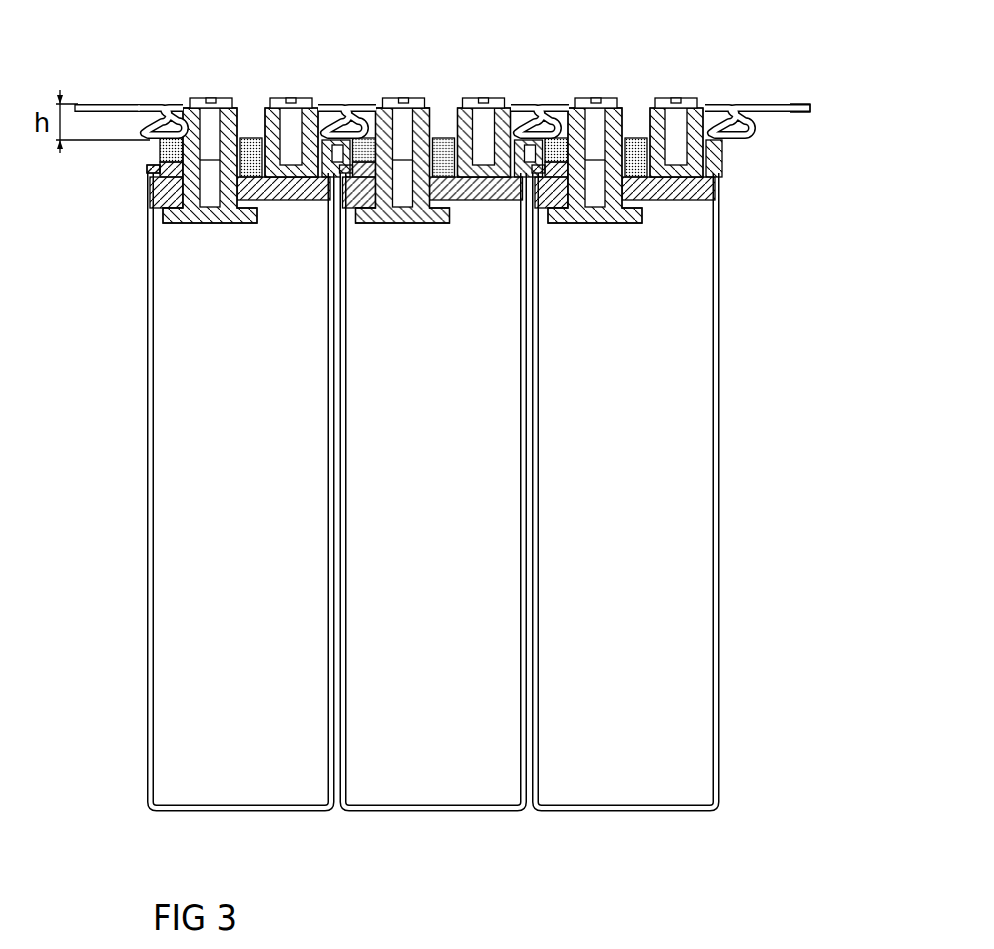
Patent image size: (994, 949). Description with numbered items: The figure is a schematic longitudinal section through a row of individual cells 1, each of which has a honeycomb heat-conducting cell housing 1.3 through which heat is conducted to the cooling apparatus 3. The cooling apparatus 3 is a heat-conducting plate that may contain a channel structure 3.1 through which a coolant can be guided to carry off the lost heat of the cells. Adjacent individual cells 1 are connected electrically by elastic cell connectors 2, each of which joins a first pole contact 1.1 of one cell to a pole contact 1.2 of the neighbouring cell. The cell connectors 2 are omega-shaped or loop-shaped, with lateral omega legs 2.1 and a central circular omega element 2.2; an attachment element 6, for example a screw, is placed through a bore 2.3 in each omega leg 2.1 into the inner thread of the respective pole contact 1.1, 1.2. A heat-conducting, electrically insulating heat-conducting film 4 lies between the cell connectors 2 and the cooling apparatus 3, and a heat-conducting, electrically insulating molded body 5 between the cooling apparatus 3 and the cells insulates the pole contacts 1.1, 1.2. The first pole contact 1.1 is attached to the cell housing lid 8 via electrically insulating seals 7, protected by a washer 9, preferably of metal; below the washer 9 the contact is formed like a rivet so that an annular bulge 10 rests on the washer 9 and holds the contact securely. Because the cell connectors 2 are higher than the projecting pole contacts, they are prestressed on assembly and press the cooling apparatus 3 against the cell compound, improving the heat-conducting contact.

The individual cell 1 is at (436, 800).
The first pole contact 1.1 is at (232, 99).
The second pole contact 1.2 is at (500, 99).
The cell housing 1.3 is at (148, 720).
The cell connector 2 is at (458, 106).
The omega leg 2.1 is at (804, 104).
The omega element 2.2 is at (736, 138).
The bore 2.3 is at (783, 113).
The cooling apparatus 3 is at (338, 179).
The channel structure 3.1 is at (341, 162).
The heat-conducting film 4 is at (447, 140).
The molded body 5 is at (458, 201).
The attachment element 6 is at (406, 98).
The seal 7 is at (152, 201).
The cell housing lid 8 is at (278, 202).
The washer 9 is at (154, 168).
The bulge 10 is at (626, 140).